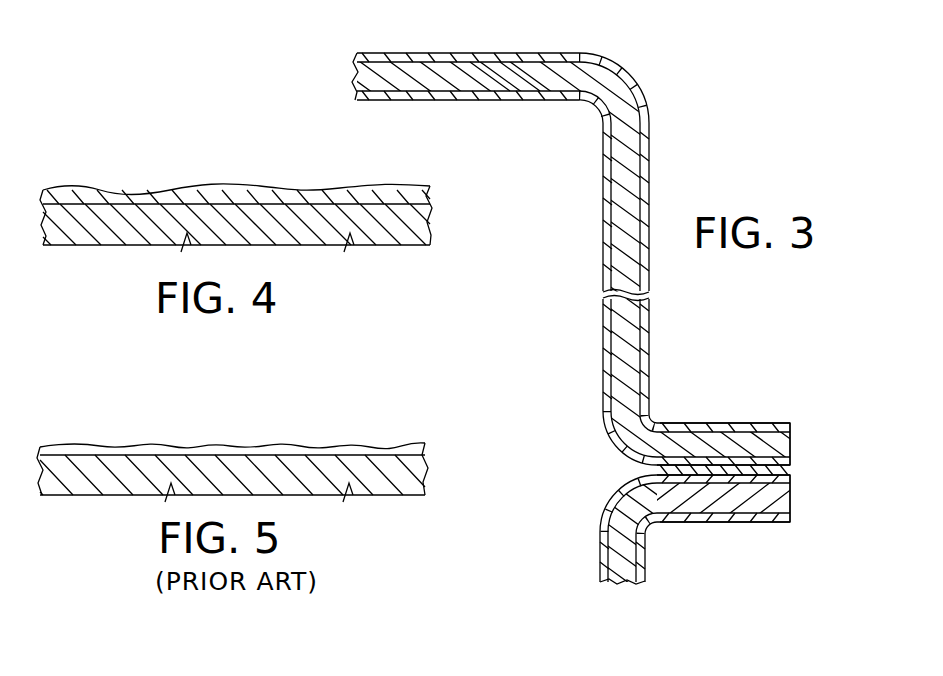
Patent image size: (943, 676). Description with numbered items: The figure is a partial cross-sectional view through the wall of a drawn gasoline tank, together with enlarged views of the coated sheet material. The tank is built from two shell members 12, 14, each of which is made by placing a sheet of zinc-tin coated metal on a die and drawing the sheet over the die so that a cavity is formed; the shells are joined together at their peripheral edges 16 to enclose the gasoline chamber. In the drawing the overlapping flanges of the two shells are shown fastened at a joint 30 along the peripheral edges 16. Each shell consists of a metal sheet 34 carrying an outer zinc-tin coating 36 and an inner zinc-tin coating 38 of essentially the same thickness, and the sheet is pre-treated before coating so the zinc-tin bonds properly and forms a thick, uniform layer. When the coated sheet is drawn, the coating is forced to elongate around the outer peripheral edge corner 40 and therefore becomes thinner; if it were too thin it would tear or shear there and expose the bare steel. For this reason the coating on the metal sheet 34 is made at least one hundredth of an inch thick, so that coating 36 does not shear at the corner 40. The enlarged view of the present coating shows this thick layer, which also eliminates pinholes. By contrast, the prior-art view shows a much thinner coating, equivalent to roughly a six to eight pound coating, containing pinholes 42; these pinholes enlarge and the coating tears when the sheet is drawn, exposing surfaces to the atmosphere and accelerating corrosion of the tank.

In FIG. 3, the shell member 12 is at (471, 311).
In FIG. 4, the shell member 12 is at (284, 208).
In FIG. 3, the shell member 14 is at (652, 570).
In FIG. 3, the peripheral edge 16 is at (792, 440).
In FIG. 3, the adhesive layer 30 is at (790, 468).
In FIG. 3, the metal sheet 34 is at (500, 78).
In FIG. 4, the metal sheet 34 is at (422, 243).
In FIG. 3, the outer zinc-tin coating 36 is at (440, 58).
In FIG. 4, the outer zinc-tin coating 36 is at (218, 198).
In FIG. 3, the inner zinc-tin coating 38 is at (420, 100).
In FIG. 3, the outer peripheral edge corner 40 is at (615, 73).
In FIG. 5, the pinholes 42 is at (360, 455).